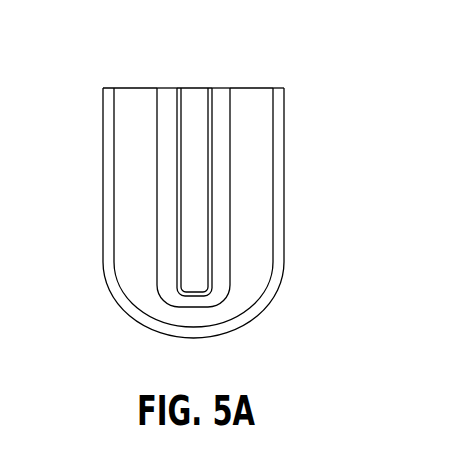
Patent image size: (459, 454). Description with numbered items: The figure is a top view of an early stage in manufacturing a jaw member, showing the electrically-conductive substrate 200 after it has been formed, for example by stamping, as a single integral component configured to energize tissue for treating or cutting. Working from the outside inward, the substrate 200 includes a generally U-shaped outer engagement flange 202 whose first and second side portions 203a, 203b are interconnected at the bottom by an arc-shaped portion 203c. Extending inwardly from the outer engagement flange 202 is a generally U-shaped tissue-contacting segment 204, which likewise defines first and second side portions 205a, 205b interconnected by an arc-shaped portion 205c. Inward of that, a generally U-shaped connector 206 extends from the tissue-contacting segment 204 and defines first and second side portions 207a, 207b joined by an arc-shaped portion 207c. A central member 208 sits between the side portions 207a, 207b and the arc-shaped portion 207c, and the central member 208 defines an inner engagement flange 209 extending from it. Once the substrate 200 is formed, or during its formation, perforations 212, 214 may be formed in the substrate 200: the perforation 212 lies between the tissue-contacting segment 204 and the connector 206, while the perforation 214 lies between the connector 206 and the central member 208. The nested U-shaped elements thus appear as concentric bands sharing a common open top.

The electrically-conductive substrate 200 is at (326, 77).
The outer engagement flange 202 is at (290, 124).
The first side portion 203a is at (280, 93).
The second side portion 203b is at (107, 93).
The arc-shaped portion 203c is at (193, 333).
The tissue-contacting segment 204 is at (277, 160).
The first side portion 205a is at (253, 93).
The second side portion 205b is at (134, 93).
The arc-shaped portion 205c is at (197, 316).
The connector 206 is at (235, 194).
The first side portion 207a is at (222, 93).
The second side portion 207b is at (166, 93).
The arc-shaped portion 207c is at (198, 300).
The central member 208 is at (192, 97).
The inner engagement flange 209 is at (180, 153).
The perforation 212 is at (157, 199).
The perforation 214 is at (175, 247).